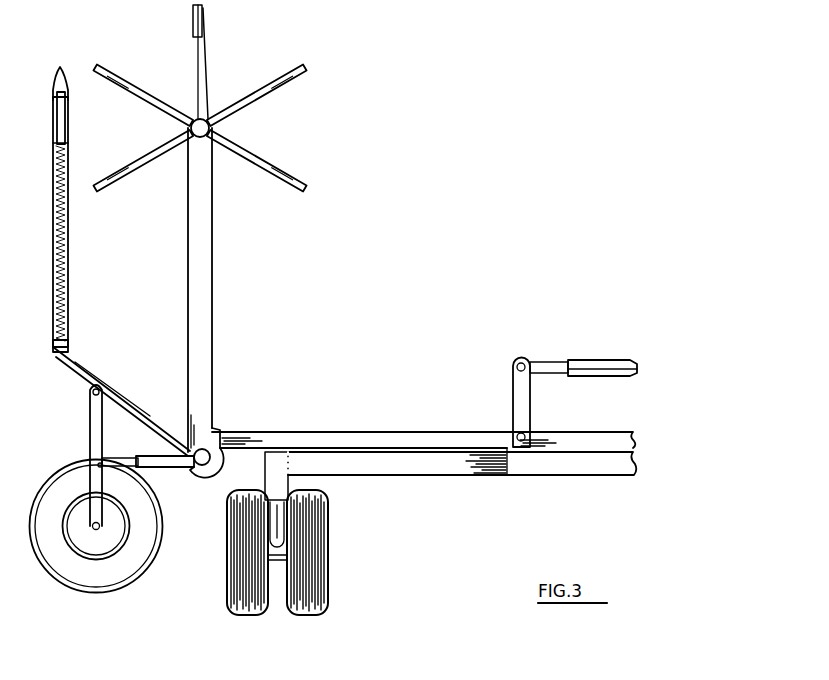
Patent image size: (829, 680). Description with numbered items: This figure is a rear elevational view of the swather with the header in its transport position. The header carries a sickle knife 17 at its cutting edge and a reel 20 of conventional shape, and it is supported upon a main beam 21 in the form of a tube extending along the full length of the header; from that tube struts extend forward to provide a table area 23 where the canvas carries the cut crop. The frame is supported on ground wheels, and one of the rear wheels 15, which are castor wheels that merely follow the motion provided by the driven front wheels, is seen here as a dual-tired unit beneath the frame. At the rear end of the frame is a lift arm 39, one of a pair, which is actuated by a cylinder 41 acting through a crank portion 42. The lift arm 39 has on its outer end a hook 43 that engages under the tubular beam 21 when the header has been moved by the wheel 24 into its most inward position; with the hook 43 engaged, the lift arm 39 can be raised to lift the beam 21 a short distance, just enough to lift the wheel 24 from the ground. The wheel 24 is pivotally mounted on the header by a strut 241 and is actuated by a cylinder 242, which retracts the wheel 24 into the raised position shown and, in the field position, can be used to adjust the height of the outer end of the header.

The rear wheels 15 is at (328, 549).
The sickle knife 17 is at (61, 66).
The reel 20 is at (294, 202).
The main beam 21 is at (183, 438).
The table area 23 is at (78, 214).
The wheel 24 is at (161, 546).
The lift arm 39 is at (401, 431).
The cylinder 41 is at (592, 362).
The crank portion 42 is at (513, 404).
The hook 43 is at (206, 470).
The strut 241 is at (90, 425).
The cylinder 242 is at (150, 468).